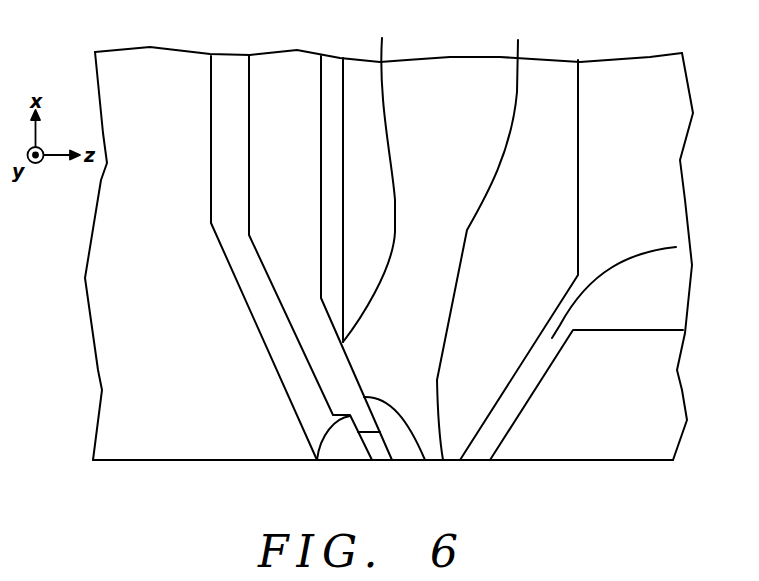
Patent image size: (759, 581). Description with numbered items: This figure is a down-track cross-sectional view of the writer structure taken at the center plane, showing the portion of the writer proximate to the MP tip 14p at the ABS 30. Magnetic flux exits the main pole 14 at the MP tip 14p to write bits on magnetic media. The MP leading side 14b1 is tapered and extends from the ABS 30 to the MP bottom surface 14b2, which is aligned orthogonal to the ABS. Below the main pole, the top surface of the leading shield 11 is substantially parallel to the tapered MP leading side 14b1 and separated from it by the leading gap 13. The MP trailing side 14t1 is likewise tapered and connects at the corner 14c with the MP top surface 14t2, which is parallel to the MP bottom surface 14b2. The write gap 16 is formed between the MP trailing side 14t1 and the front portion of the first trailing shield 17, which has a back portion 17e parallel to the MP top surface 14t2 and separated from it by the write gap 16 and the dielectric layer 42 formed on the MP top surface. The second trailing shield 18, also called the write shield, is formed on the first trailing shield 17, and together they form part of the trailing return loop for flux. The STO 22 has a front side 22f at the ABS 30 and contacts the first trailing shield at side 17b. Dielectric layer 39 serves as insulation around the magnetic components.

The leading shield 11 is at (675, 412).
The leading gap 13 is at (687, 243).
The main pole 14 is at (443, 75).
The MP leading side 14b1 is at (495, 408).
The MP bottom surface 14b2 is at (580, 113).
The corner 14c is at (376, 178).
The MP tip 14p is at (493, 238).
The MP trailing side 14t1 is at (423, 460).
The MP top surface 14t2 is at (343, 88).
The write gap 16 is at (292, 270).
The first trailing shield 17 is at (267, 309).
The first TS side 17b is at (318, 461).
The first TS back portion 17e is at (227, 90).
The second trailing shield 18 is at (113, 290).
The STO 22 is at (373, 450).
The STO front side 22f is at (390, 461).
The ABS 30 is at (707, 461).
The dielectric layer 39 is at (677, 108).
The dielectric layer 42 is at (332, 138).